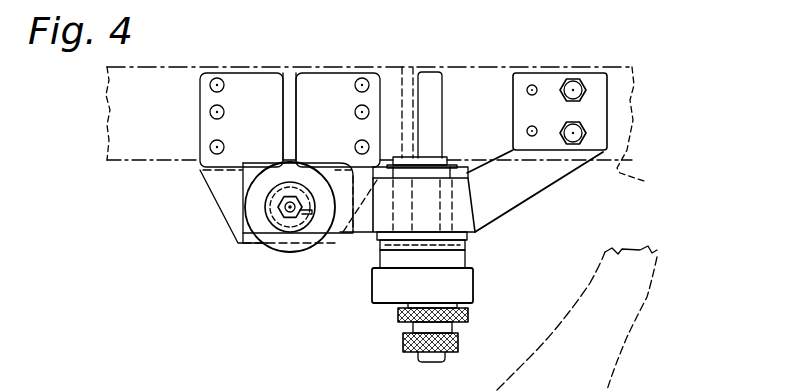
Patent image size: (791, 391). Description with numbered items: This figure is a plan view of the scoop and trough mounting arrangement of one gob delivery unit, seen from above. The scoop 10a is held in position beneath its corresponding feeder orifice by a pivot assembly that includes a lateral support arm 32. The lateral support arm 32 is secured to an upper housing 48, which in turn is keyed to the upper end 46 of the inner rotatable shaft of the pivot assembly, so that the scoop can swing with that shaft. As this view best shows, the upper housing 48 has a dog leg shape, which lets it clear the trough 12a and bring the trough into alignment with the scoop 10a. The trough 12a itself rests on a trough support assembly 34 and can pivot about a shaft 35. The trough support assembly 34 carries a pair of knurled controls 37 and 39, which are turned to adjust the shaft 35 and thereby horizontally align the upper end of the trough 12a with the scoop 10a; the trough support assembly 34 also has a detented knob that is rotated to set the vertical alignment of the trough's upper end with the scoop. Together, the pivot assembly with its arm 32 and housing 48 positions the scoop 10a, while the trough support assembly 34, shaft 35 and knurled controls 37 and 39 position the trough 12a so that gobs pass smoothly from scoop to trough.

The scoop 10a is at (592, 363).
The trough 12a is at (170, 137).
The lateral support arm 32 is at (530, 184).
The trough support assembly 34 is at (367, 299).
The shaft 35 is at (437, 93).
The knurled control 37 is at (460, 352).
The knurled control 39 is at (470, 315).
The upper end of inner rotatable shaft 46 is at (290, 213).
The upper housing 48 is at (255, 220).